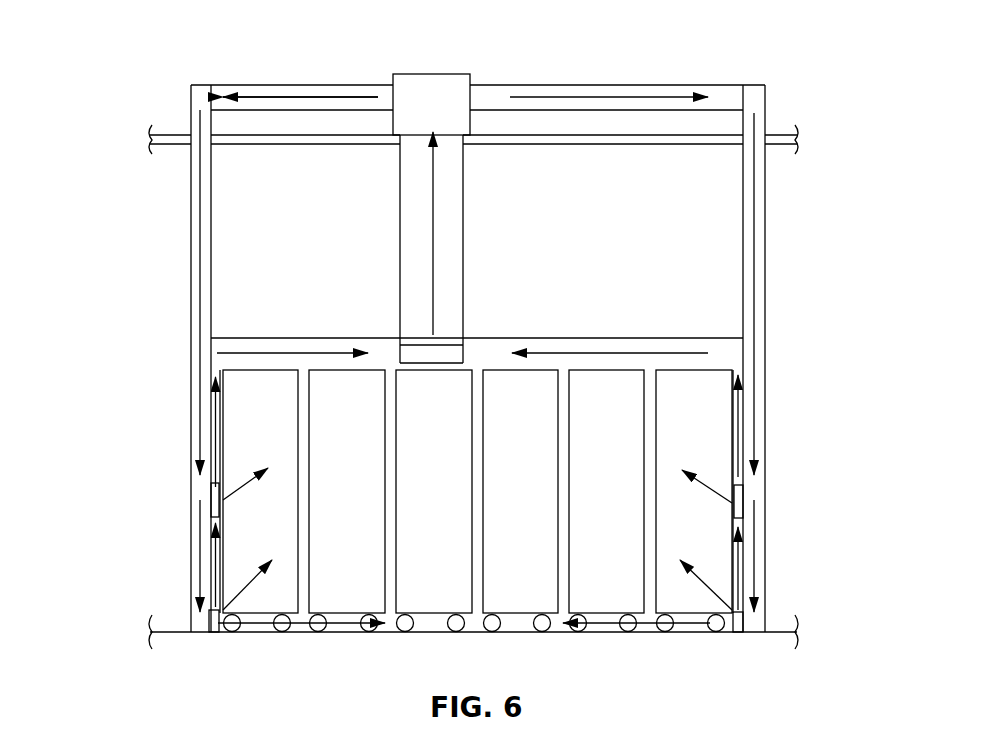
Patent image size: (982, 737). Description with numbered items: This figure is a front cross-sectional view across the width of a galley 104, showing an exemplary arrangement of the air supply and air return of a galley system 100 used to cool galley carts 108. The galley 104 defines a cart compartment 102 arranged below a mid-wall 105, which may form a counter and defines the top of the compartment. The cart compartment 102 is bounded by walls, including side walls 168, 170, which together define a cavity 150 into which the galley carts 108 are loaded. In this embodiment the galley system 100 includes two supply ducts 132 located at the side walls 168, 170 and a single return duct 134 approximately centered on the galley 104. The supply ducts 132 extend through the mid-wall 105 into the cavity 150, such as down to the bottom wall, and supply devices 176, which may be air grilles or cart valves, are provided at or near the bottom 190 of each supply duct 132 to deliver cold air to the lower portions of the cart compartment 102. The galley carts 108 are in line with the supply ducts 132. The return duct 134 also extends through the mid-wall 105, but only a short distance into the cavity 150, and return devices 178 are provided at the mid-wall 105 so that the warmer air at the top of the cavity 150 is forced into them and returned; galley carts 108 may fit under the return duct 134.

The galley system 100 is at (607, 55).
The cart compartment 102 is at (720, 340).
The galley 104 is at (145, 268).
The mid-wall 105 is at (637, 340).
The galley carts 108 is at (240, 440).
The supply duct 132 is at (193, 317).
The return duct 134 is at (463, 282).
The cavity 150 is at (570, 347).
The side wall 168 is at (763, 467).
The side wall 170 is at (190, 495).
The supply device 176 is at (212, 497).
The return device 178 is at (440, 350).
The bottom 190 is at (198, 622).